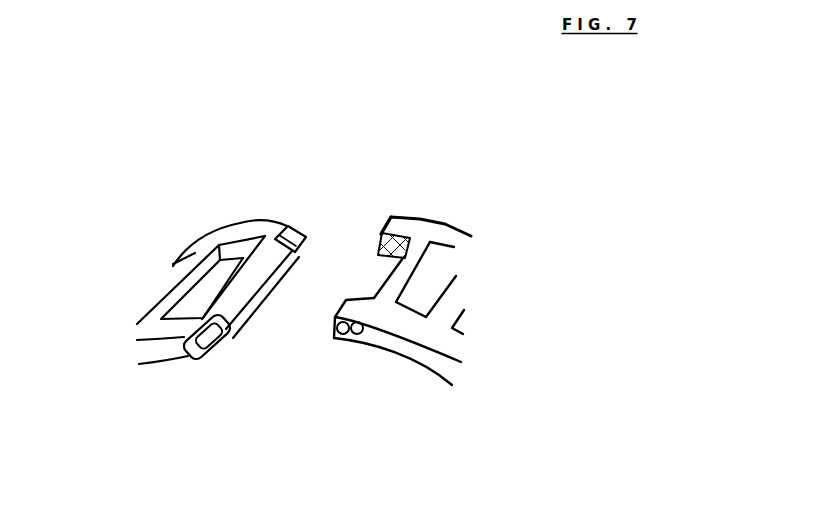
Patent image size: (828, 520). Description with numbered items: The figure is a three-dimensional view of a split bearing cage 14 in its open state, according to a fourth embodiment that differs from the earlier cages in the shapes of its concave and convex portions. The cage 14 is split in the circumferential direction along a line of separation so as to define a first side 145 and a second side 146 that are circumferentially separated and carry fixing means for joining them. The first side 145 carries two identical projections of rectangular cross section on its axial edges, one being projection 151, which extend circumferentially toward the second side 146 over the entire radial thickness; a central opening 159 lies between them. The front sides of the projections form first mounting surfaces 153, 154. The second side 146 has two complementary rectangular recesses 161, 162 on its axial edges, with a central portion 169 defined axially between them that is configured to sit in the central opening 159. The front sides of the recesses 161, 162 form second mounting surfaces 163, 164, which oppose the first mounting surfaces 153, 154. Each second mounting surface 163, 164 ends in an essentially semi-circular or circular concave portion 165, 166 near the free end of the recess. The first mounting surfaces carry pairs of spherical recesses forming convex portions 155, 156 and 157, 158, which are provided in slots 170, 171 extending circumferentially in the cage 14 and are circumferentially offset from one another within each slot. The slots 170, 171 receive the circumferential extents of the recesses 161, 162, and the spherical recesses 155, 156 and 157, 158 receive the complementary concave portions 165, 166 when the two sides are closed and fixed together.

The cage 14 is at (538, 328).
The first side 145 is at (421, 268).
The second side 146 is at (270, 320).
The projection 151 is at (398, 221).
The mounting surface 153 is at (378, 238).
The mounting surface 154 is at (334, 328).
The convex portion 155 is at (392, 230).
The convex portion 156 is at (420, 220).
The convex portion 157 is at (338, 335).
The convex portion 158 is at (358, 336).
The central opening 159 is at (455, 330).
The recess 161 is at (287, 215).
The recess 162 is at (164, 310).
The mounting surface 163 is at (285, 215).
The mounting surface 164 is at (203, 358).
The concave portion 165 is at (305, 228).
The concave portion 166 is at (217, 360).
The central portion 169 is at (243, 332).
The slot 170 is at (403, 272).
The slot 171 is at (433, 289).